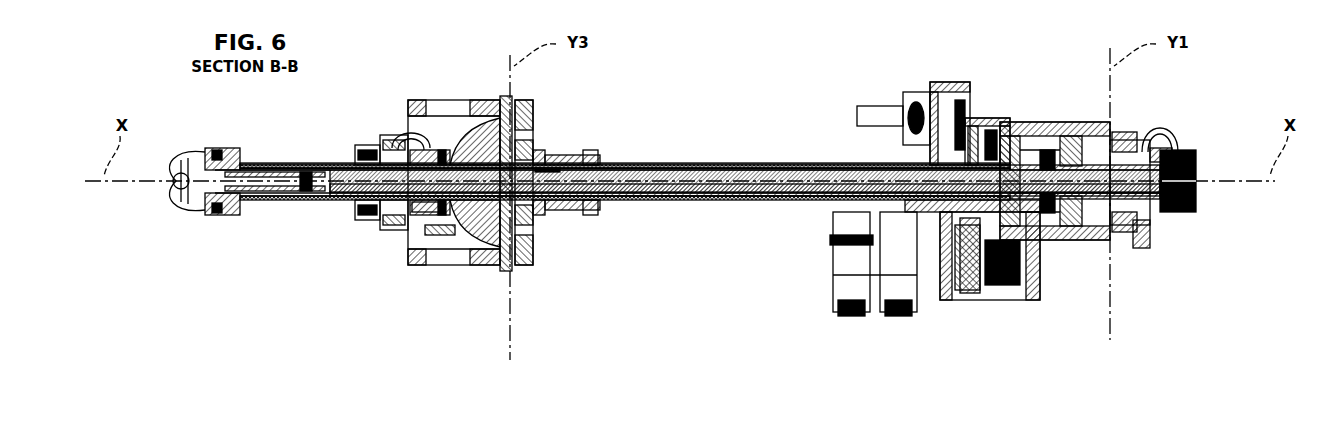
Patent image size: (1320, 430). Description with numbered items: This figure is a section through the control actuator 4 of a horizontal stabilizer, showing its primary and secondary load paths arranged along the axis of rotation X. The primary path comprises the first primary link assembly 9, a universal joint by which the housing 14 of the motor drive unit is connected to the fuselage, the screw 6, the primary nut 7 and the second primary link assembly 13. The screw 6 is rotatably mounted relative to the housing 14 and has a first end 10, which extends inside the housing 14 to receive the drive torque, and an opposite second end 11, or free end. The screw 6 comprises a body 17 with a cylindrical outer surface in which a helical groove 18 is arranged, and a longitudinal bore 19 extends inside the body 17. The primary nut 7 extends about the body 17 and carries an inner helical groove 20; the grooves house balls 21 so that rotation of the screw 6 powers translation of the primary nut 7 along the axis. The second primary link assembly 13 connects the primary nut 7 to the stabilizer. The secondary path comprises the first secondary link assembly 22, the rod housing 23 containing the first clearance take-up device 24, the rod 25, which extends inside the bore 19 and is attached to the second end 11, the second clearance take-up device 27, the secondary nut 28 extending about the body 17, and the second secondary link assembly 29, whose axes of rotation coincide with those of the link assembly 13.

The actuator 4 is at (975, 46).
The screw 6 is at (745, 162).
The primary nut 7 is at (586, 152).
The first primary link assembly 9 is at (1124, 130).
The first end 10 is at (968, 230).
The second end 11 is at (215, 160).
The second primary link assembly 13 is at (538, 140).
The housing 14 is at (1012, 130).
The body 17 is at (718, 165).
The helical groove 18 is at (690, 165).
The longitudinal bore 19 is at (700, 192).
The helical groove 20 is at (540, 170).
The balls 21 is at (558, 168).
The first secondary link assembly 22 is at (1135, 140).
The first housing 23 is at (450, 225).
The first clearance take-up device 24 is at (1162, 205).
The rod 25 is at (800, 192).
The second clearance take-up device 27 is at (440, 210).
The secondary nut 28 is at (460, 160).
The second secondary link assembly 29 is at (470, 52).